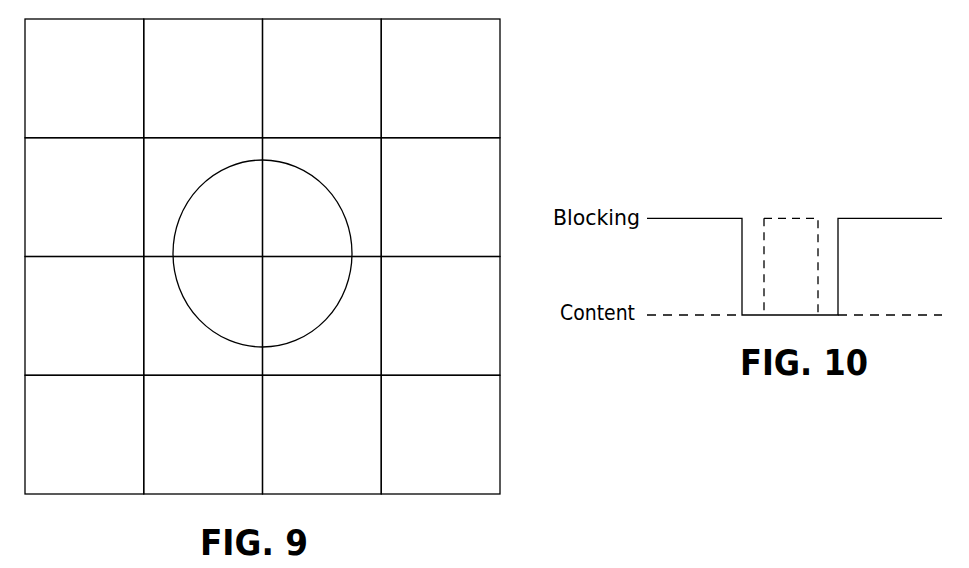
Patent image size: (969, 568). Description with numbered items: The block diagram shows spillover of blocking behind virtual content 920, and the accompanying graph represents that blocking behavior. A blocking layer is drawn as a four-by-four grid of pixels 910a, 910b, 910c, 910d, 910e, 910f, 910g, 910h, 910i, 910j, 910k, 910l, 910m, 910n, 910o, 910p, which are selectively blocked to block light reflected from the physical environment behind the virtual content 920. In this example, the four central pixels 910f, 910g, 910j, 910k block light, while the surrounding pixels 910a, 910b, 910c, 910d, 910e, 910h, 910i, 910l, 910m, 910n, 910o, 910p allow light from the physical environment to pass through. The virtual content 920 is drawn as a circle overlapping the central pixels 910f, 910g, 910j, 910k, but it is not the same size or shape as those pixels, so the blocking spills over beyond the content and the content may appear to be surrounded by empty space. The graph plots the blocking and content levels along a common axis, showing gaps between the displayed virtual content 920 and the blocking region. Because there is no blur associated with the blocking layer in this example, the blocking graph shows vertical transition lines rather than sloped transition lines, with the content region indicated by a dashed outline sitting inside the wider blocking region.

The pixel 910a is at (109, 89).
The pixel 910b is at (178, 89).
The pixel 910c is at (346, 89).
The pixel 910d is at (466, 89).
The pixel 910e is at (109, 208).
The pixel 910f is at (181, 166).
The pixel 910g is at (347, 166).
The pixel 910h is at (466, 208).
The pixel 910i is at (105, 327).
The pixel 910j is at (182, 369).
The pixel 910k is at (346, 369).
The pixel 910l is at (420, 327).
The pixel 910m is at (113, 446).
The pixel 910n is at (178, 446).
The pixel 910o is at (347, 446).
The pixel 910p is at (466, 446).
The virtual content 920 is at (338, 200).